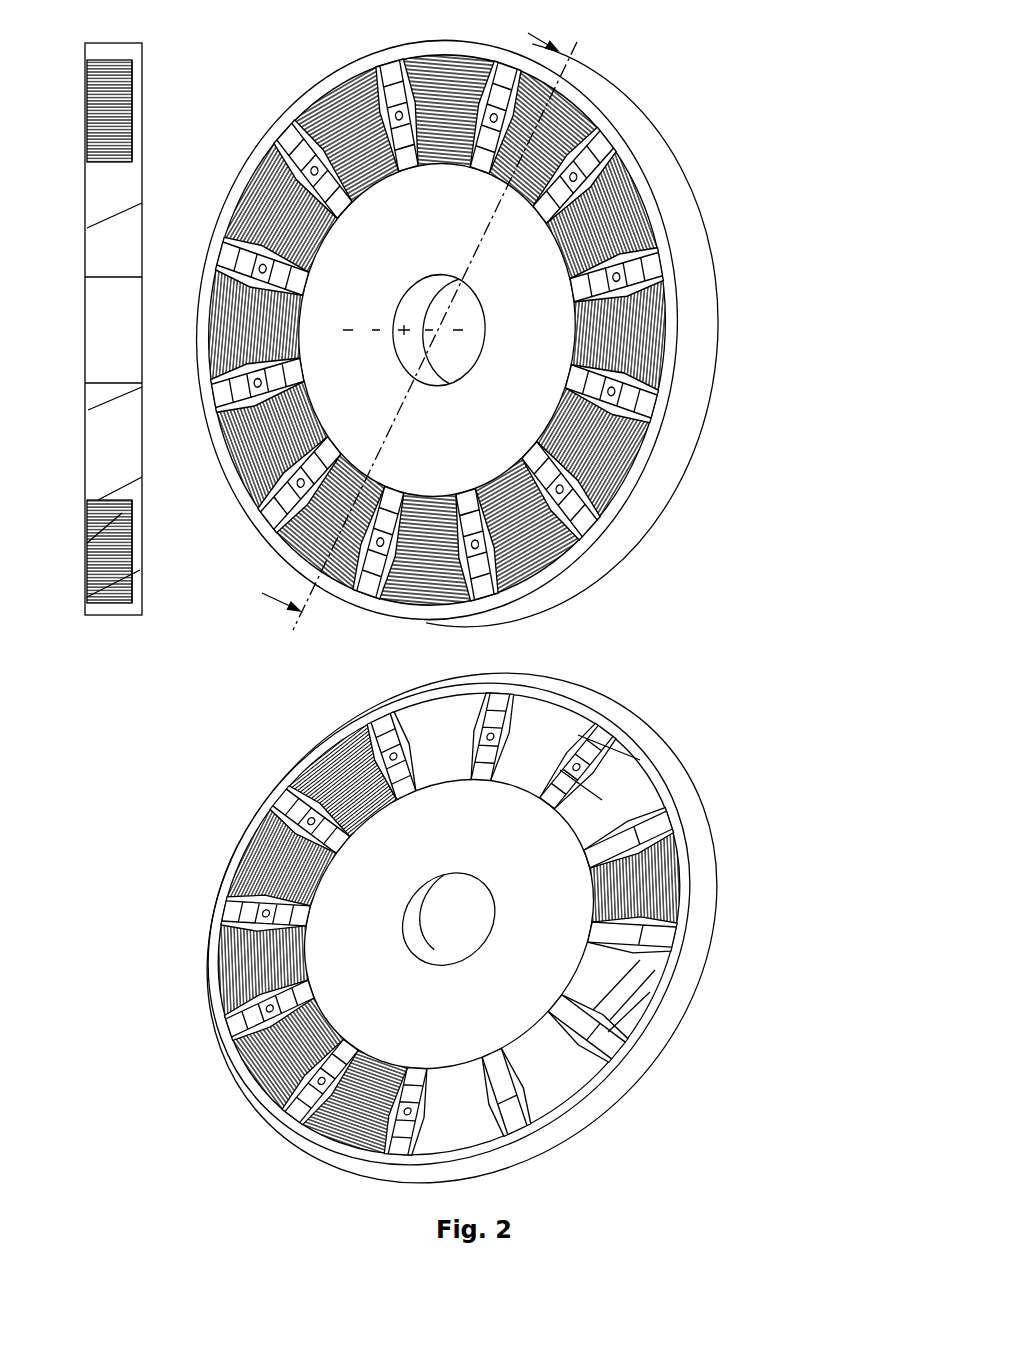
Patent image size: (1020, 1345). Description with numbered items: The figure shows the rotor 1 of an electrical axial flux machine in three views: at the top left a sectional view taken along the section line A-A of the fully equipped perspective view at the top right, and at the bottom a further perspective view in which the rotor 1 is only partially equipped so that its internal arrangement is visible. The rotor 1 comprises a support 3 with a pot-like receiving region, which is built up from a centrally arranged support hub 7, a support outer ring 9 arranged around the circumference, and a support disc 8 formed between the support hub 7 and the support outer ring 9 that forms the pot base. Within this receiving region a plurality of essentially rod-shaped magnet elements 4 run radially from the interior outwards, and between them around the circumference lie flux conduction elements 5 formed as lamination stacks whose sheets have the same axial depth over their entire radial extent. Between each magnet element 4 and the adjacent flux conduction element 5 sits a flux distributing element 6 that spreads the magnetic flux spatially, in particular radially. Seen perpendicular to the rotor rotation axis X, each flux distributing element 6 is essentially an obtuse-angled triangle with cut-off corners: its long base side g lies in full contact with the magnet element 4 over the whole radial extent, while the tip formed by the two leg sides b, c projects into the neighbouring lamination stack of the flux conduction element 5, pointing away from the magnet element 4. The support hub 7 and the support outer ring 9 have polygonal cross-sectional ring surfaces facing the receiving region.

The rotor 1 is at (479, 647).
The support 3 is at (633, 512).
The magnet element 4 is at (657, 390).
The flux conduction element 5 is at (86, 92).
The flux distributing element 6 is at (657, 420).
The support hub 7 is at (380, 853).
The support disc 8 is at (134, 133).
The support outer ring 9 is at (103, 608).
The rotor rotation axis X is at (352, 333).
The section line A- A is at (419, 321).
The leg side of triangle c is at (593, 1010).
The base side of triangle g is at (610, 1020).
The leg side of triangle b is at (608, 1032).